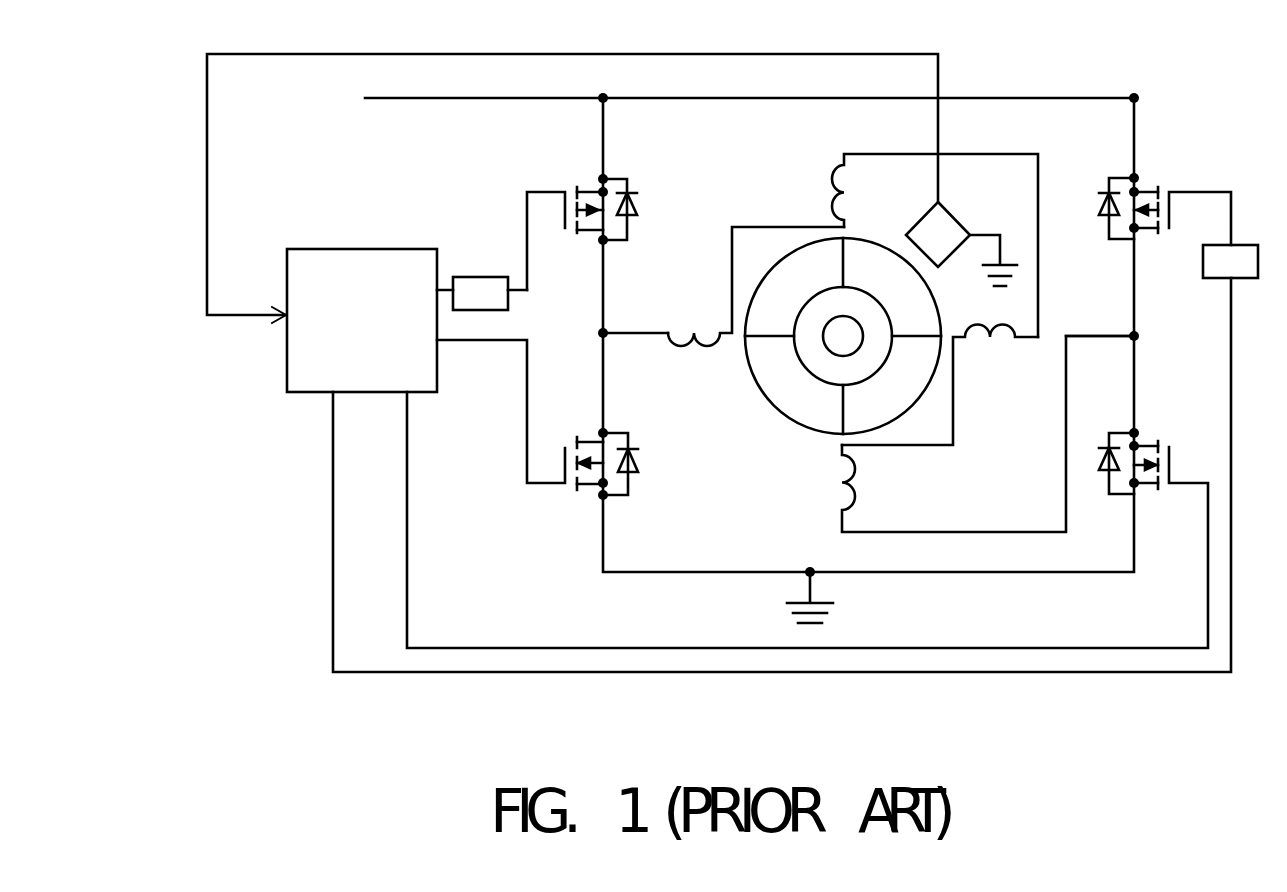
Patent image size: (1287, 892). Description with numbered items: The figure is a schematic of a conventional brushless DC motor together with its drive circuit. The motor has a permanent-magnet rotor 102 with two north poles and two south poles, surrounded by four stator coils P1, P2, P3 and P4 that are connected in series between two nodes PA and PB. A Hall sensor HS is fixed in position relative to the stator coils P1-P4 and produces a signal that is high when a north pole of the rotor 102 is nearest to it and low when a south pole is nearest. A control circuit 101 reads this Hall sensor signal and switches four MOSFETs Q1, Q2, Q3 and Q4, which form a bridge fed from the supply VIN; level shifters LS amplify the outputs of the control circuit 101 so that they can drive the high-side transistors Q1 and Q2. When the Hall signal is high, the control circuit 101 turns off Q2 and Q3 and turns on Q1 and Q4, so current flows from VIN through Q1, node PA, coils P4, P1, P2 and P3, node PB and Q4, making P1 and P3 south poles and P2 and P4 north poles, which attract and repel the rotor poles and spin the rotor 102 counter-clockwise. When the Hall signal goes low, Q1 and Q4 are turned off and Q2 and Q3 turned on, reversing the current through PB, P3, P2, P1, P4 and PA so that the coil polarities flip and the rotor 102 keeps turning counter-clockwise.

The control circuit 101 is at (286, 352).
The rotor 102 is at (756, 393).
The high-side MOSFET Q1 is at (594, 232).
The high-side MOSFET Q2 is at (782, 422).
The MOSFET Q3 is at (553, 429).
The MOSFET Q4 is at (807, 520).
The stator coil P1 is at (935, 245).
The stator coil P2 is at (940, 385).
The stator coil P3 is at (965, 434).
The stator coil P4 is at (756, 286).
The Hall sensor HS is at (961, 244).
The level shifter LS is at (847, 279).
The node PA is at (608, 341).
The node PB is at (1124, 341).
The input voltage VIN is at (732, 96).